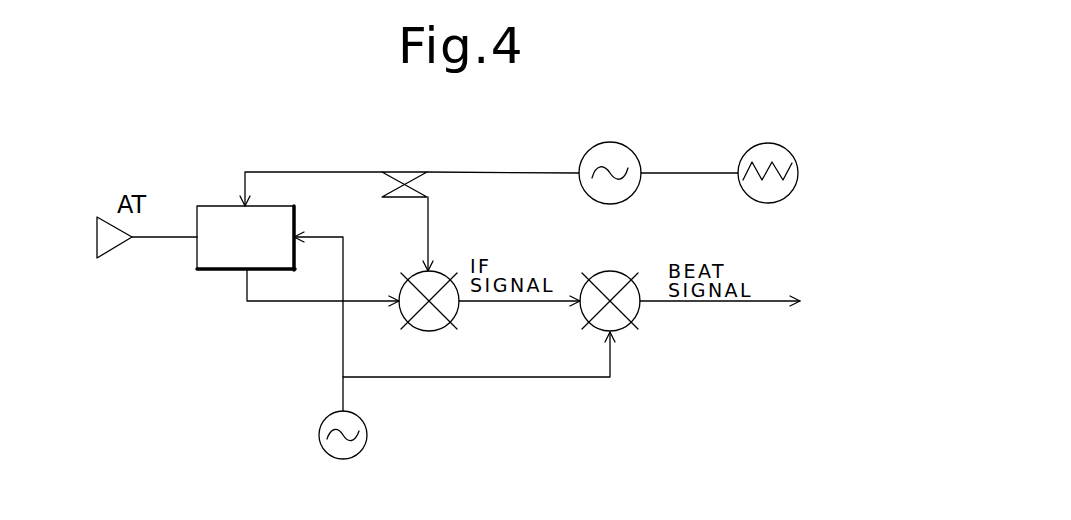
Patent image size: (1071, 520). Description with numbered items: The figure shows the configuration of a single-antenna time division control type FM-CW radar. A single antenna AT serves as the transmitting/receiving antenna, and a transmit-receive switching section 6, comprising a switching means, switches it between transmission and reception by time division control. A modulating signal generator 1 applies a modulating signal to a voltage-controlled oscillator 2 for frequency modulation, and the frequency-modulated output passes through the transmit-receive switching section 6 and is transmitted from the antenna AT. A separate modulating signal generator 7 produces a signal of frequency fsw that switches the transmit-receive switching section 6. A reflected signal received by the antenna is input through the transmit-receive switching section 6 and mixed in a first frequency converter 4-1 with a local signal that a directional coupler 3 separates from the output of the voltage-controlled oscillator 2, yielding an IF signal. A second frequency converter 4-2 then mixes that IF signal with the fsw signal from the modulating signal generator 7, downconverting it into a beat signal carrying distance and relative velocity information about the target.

The modulating signal generator 1 is at (789, 147).
The voltage-controlled oscillator 2 is at (631, 147).
The directional coupler 3 is at (411, 170).
The first frequency converter 4-1 is at (421, 331).
The second frequency converter 4-2 is at (632, 323).
The transmit-receive switching section 6 is at (205, 270).
The modulating signal generator 7 is at (367, 440).